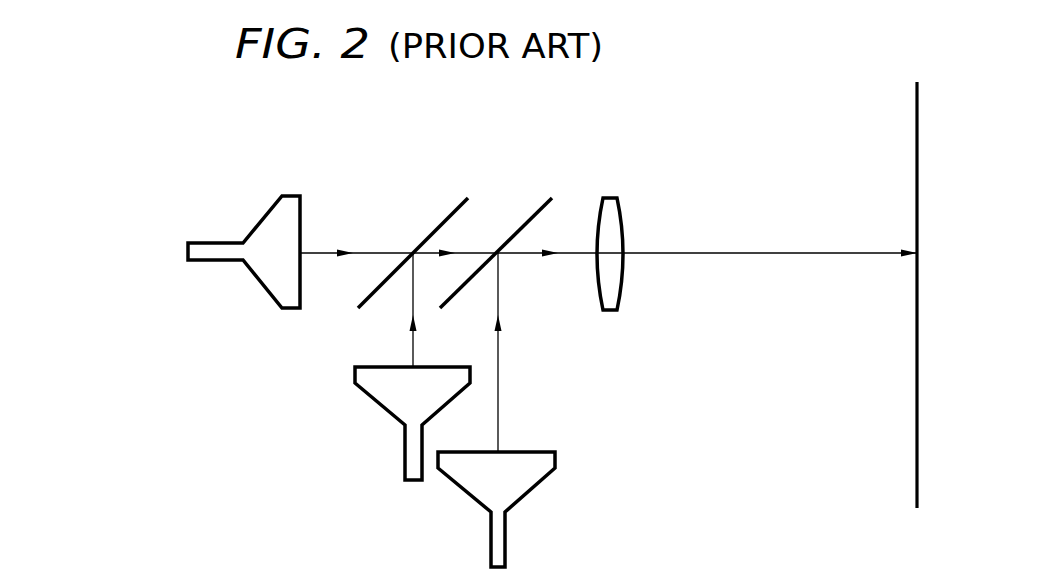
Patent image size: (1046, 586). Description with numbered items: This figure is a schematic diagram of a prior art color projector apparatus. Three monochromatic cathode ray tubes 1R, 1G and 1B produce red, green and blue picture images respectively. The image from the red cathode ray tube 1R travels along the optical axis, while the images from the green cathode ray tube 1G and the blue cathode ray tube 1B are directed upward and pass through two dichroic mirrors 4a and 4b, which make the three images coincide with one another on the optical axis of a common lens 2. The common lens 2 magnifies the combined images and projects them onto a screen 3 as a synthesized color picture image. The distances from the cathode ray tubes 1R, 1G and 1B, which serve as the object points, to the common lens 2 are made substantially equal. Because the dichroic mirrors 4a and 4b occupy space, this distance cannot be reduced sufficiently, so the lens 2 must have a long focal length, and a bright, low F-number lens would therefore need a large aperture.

The monochromatic cathode ray tube (red) 1R is at (262, 283).
The monochromatic cathode ray tube (green) 1G is at (385, 408).
The monochromatic cathode ray tube (blue) 1B is at (530, 490).
The dichroic mirror 4a is at (458, 208).
The dichroic mirror 4b is at (542, 208).
The common lens 2 is at (625, 220).
The screen 3 is at (917, 140).